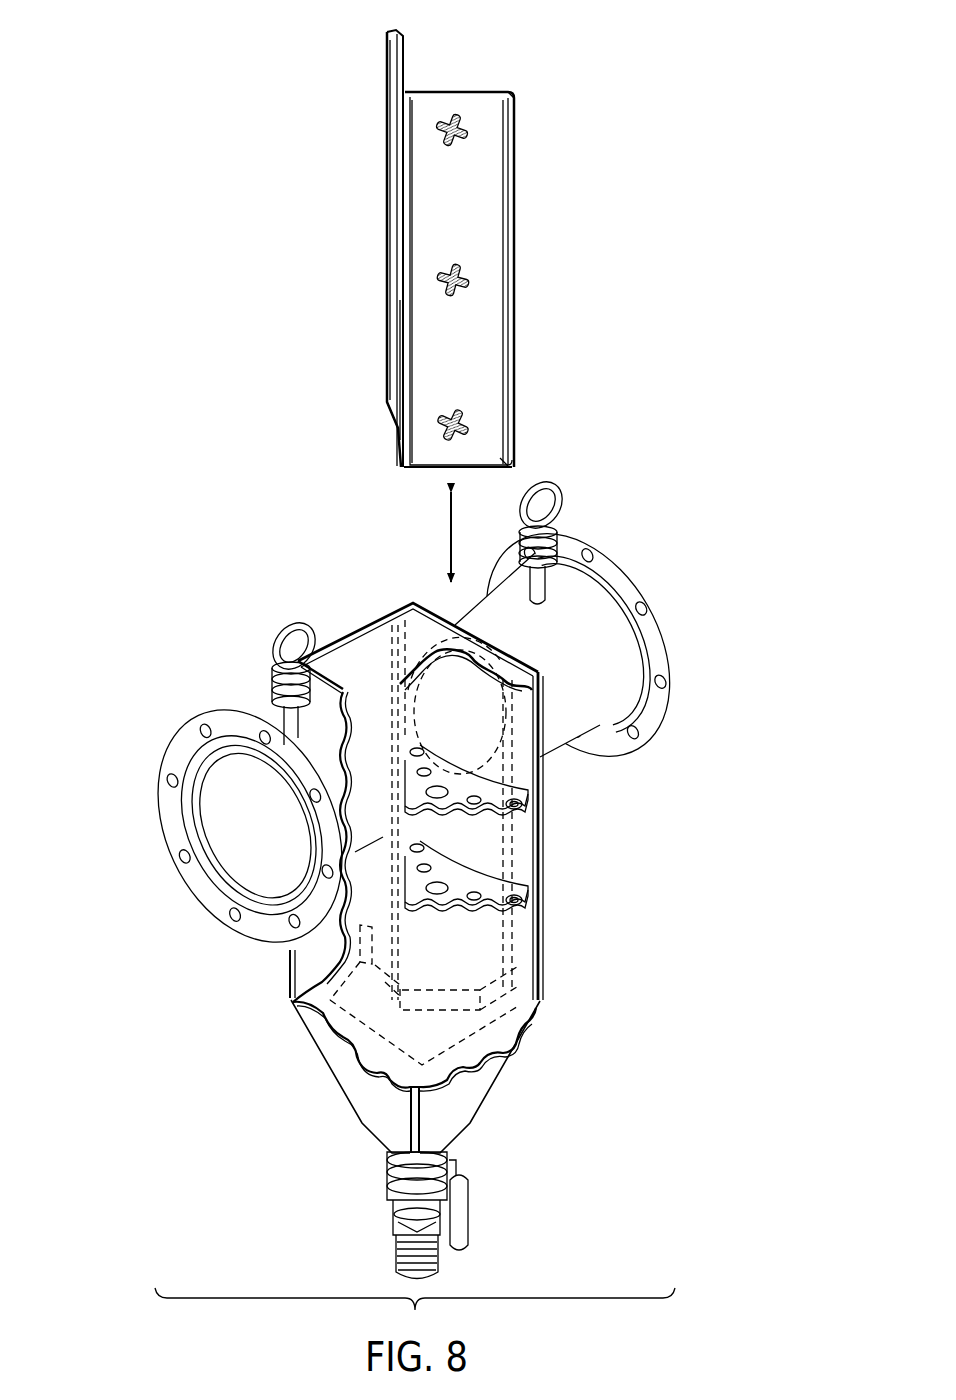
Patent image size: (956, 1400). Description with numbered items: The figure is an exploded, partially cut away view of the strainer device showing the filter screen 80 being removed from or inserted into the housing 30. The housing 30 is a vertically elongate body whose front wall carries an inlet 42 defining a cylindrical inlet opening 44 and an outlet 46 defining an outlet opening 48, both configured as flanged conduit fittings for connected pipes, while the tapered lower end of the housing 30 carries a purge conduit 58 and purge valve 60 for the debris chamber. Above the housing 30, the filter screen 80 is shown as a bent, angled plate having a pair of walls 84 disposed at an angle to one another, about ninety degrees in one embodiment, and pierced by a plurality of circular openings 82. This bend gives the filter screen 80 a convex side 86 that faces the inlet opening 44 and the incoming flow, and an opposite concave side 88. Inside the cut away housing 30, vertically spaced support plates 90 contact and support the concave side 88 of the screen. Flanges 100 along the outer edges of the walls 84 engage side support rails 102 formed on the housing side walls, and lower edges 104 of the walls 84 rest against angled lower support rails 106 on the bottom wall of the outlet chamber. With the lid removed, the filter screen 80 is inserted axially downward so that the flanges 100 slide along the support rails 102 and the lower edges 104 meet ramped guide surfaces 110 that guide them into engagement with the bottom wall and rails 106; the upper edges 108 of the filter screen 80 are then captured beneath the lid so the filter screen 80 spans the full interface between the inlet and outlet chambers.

The housing 30 is at (283, 963).
The inlet 42 is at (126, 778).
The inlet opening 44 is at (240, 832).
The outlet 46 is at (641, 566).
The outlet opening 48 is at (602, 632).
The purge conduit 58 is at (405, 1229).
The purge valve 60 is at (470, 1166).
The filter screen 80 is at (478, 66).
The openings 82 is at (470, 279).
The walls 84 is at (490, 338).
The convex side 86 is at (395, 248).
The concave side 88 is at (459, 279).
The support plates 90 is at (493, 802).
The flanges 100 is at (512, 150).
The side support rails 102 is at (392, 640).
The lower edges 104 is at (490, 465).
The lower support rails 106 is at (541, 925).
The upper edges 108 is at (476, 93).
The ramped guide surfaces 110 is at (533, 1035).